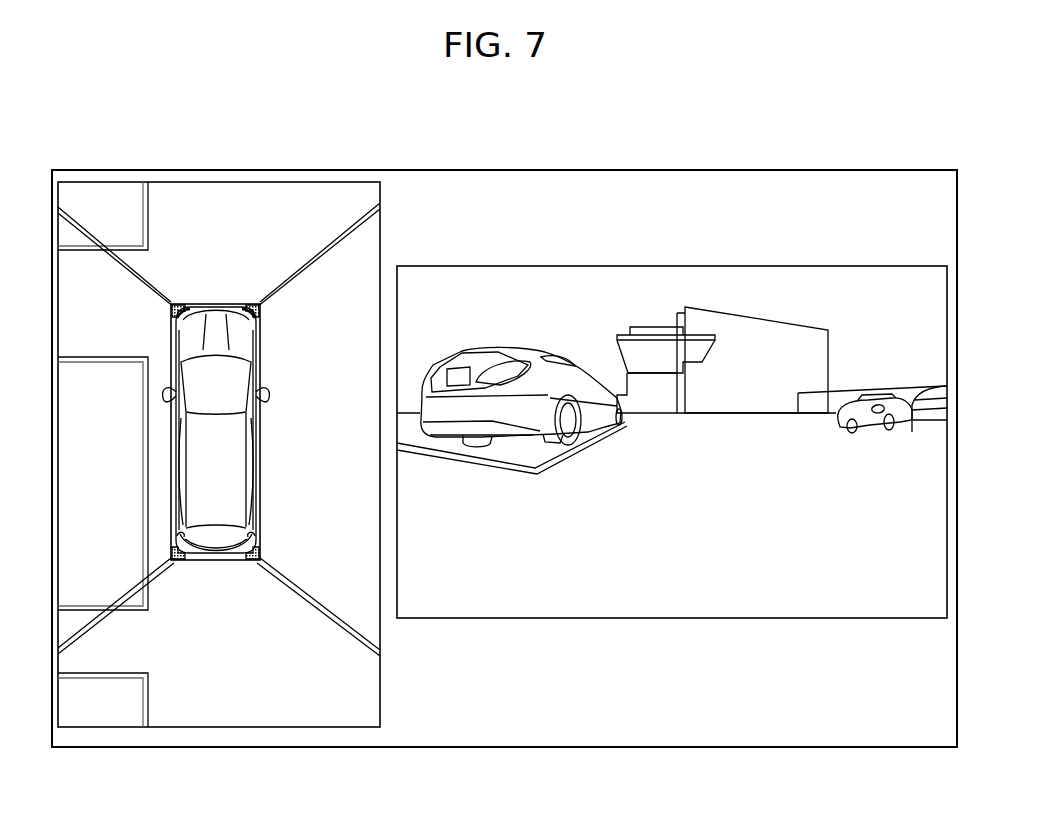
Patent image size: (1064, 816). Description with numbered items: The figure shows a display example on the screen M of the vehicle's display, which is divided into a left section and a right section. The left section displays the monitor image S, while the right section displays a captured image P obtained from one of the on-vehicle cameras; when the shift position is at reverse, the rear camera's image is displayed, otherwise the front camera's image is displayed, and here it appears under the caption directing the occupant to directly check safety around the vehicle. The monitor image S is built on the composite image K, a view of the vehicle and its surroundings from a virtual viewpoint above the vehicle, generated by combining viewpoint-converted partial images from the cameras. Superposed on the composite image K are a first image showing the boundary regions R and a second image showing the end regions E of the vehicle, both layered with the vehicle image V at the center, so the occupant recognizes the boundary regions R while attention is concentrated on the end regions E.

The screen M is at (846, 134).
The monitor image S is at (218, 214).
The composite image K is at (340, 692).
The boundary regions R is at (148, 280).
The end regions E is at (179, 303).
The vehicle image V is at (210, 458).
The captured image P is at (917, 535).